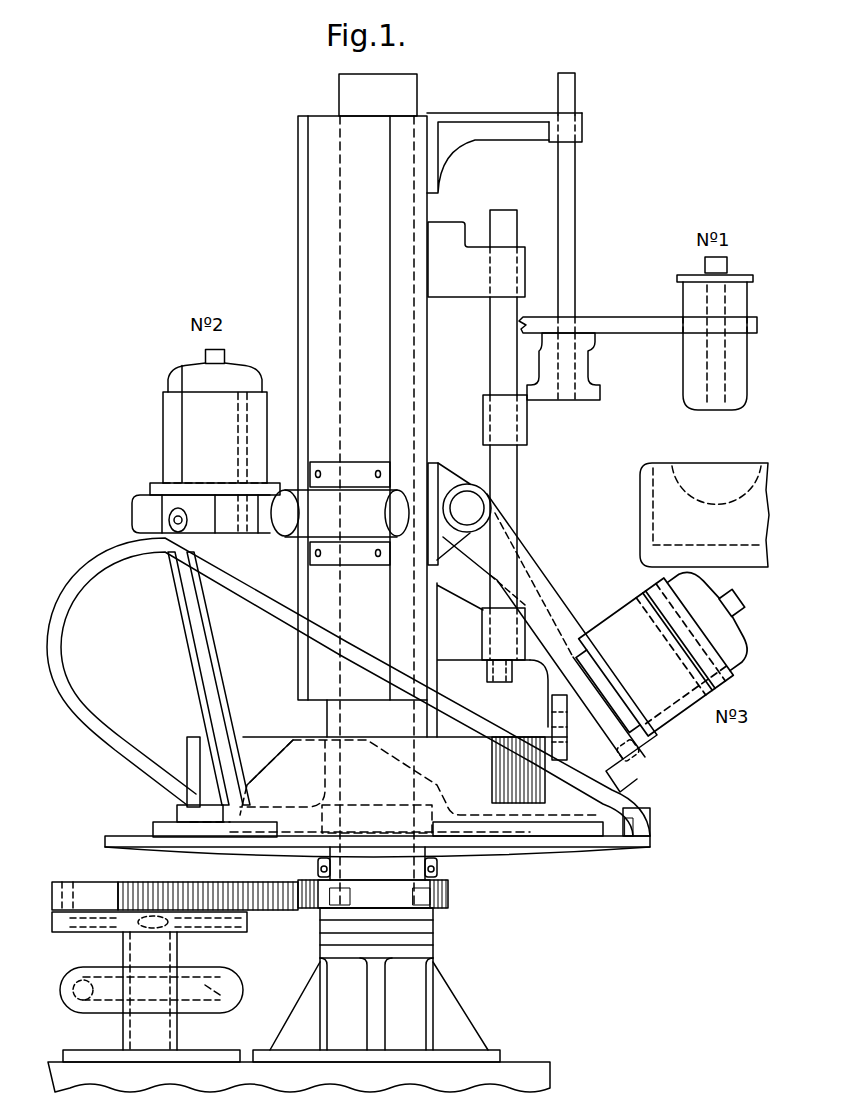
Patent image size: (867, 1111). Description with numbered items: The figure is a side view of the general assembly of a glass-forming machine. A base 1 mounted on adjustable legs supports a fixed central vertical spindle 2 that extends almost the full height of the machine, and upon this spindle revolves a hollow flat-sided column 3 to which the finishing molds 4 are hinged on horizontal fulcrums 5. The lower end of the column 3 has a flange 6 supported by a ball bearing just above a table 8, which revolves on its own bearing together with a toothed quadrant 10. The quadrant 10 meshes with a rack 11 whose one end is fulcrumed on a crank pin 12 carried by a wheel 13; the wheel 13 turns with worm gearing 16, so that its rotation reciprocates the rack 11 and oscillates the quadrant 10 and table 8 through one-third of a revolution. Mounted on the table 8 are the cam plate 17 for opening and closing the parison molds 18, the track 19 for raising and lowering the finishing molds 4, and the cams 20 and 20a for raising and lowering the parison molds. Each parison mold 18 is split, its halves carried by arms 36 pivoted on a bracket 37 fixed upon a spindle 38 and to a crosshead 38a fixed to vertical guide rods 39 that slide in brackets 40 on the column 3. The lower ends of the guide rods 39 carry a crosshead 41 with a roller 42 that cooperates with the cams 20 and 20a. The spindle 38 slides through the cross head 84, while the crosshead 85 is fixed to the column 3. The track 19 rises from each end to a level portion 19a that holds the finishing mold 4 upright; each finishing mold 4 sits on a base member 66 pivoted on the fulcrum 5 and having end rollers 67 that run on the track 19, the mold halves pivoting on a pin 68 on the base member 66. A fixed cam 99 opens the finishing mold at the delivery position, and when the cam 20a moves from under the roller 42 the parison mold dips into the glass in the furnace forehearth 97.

The base 1 is at (505, 1075).
The central vertical spindle 2 is at (395, 96).
The column 3 is at (320, 266).
The finishing mold 4 is at (200, 437).
The fulcrum 5 is at (467, 505).
The flange 6 is at (480, 830).
The table 8 is at (598, 838).
The toothed quadrant 10 is at (448, 895).
The rack 11 is at (218, 893).
The crank pin 12 is at (70, 889).
The wheel 13 is at (228, 928).
The worm gearing 16 is at (225, 988).
The cam plate 17 is at (505, 740).
The parison mold 18 is at (690, 370).
The track 19 is at (125, 750).
The level portion 19a is at (160, 542).
The cam 20 is at (548, 735).
The cam 20a is at (190, 757).
The arm 36 is at (612, 323).
The bracket 37 is at (578, 358).
The spindle 38 is at (568, 235).
The crosshead 38a is at (527, 410).
The guide rod 39 is at (500, 482).
The bracket 40 is at (462, 284).
The crosshead 41 is at (538, 675).
The roller 42 is at (567, 718).
The base member 66 is at (140, 503).
The end roller 67 is at (170, 520).
The pin 68 is at (575, 633).
The cross head 84 is at (582, 128).
The crosshead 85 is at (432, 142).
The furnace forehearth 97 is at (704, 515).
The fixed cam 99 is at (617, 785).